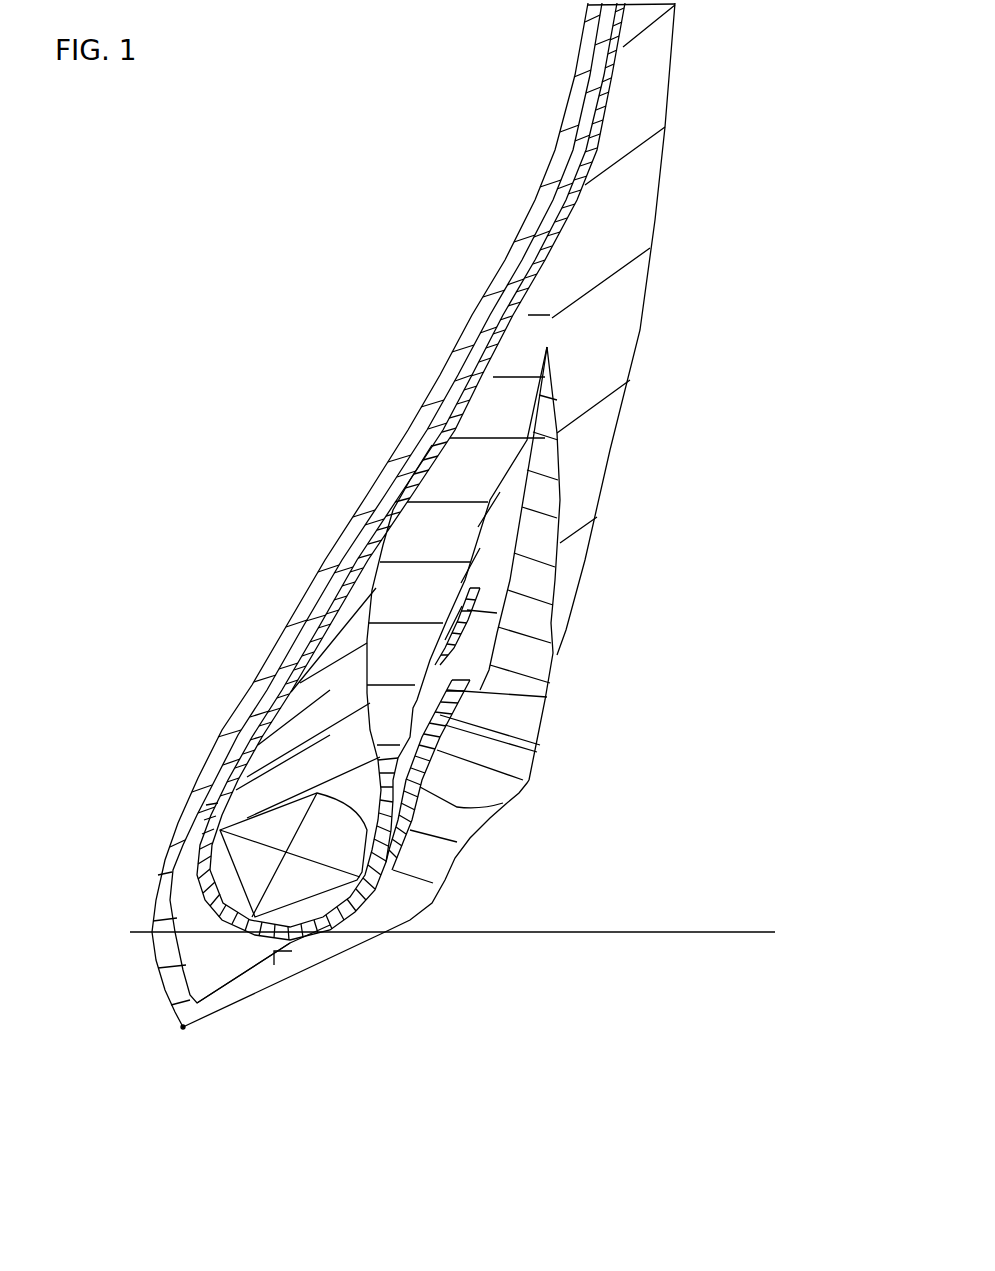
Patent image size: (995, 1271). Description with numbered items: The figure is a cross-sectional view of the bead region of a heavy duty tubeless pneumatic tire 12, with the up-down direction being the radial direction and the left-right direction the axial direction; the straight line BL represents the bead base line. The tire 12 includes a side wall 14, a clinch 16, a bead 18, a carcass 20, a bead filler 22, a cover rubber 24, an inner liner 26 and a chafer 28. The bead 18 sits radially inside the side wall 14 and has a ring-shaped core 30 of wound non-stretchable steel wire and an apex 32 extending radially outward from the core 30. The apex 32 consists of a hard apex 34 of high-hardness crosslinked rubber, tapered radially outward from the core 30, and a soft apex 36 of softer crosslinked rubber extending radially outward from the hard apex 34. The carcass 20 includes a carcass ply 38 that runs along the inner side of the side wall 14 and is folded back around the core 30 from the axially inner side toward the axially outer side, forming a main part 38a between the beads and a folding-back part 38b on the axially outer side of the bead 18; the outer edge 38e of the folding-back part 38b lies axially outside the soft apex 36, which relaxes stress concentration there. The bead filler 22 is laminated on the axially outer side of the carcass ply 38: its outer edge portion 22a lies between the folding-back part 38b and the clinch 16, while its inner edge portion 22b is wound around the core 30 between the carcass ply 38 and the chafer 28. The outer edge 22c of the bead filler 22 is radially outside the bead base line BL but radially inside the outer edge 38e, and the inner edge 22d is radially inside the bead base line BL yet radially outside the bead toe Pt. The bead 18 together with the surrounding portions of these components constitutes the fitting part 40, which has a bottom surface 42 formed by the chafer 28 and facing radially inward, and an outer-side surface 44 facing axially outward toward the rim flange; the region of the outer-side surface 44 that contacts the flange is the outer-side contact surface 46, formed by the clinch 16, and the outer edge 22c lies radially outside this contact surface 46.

The pneumatic tire 12 is at (307, 46).
The side wall 14 is at (657, 86).
The inner liner 26 is at (555, 148).
The carcass 20 is at (558, 270).
The carcass ply 38 is at (410, 471).
The soft apex 36 is at (427, 483).
The hard apex 34 is at (303, 610).
The cover rubber 24 is at (517, 490).
The clinch 16 is at (547, 452).
The outer edge 38e is at (477, 582).
The folding-back part 38b is at (563, 632).
The main part 38a is at (283, 690).
The outer edge 22c is at (455, 672).
The fitting part 40 is at (226, 724).
The outer edge portion 22a is at (455, 746).
The outer-side surface 44 is at (527, 775).
The bead 18 is at (90, 745).
The apex 32 is at (250, 790).
The bead filler 22 is at (507, 805).
The core 30 is at (222, 873).
The outer-side contact surface 46 is at (477, 837).
The inner edge portion 22b is at (313, 968).
The bead base line BL is at (633, 930).
The inner edge 22d is at (262, 995).
The bottom surface 42 is at (297, 985).
The bead toe Pt is at (183, 1027).
The chafer 28 is at (210, 1013).